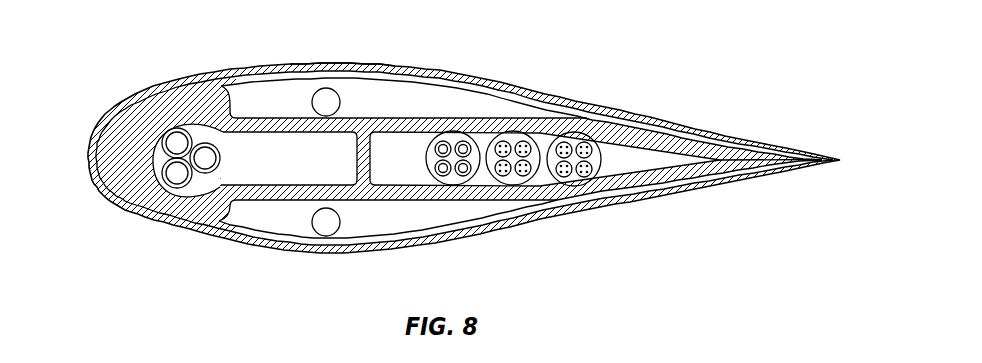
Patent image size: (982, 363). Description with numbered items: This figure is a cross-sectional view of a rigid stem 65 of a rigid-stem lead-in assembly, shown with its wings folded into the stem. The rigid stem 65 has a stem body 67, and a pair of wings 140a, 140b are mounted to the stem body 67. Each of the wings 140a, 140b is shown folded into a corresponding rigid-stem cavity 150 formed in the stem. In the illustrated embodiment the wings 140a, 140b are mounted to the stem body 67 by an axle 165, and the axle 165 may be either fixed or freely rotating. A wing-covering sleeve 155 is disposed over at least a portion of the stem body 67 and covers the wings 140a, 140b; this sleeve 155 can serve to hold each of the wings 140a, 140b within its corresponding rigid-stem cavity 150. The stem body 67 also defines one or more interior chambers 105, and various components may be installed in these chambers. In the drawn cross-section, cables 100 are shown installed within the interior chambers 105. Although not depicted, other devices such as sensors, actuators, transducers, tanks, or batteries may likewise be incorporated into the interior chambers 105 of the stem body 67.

The rigid stem 65 is at (672, 103).
The stem body 67 is at (723, 141).
The cables 100 is at (164, 168).
The interior chambers 105 is at (282, 157).
The wing 140a is at (485, 100).
The wing 140b is at (418, 222).
The rigid-stem cavity 150 is at (423, 78).
The wing-covering sleeve 155 is at (346, 63).
The axle 165 is at (326, 102).